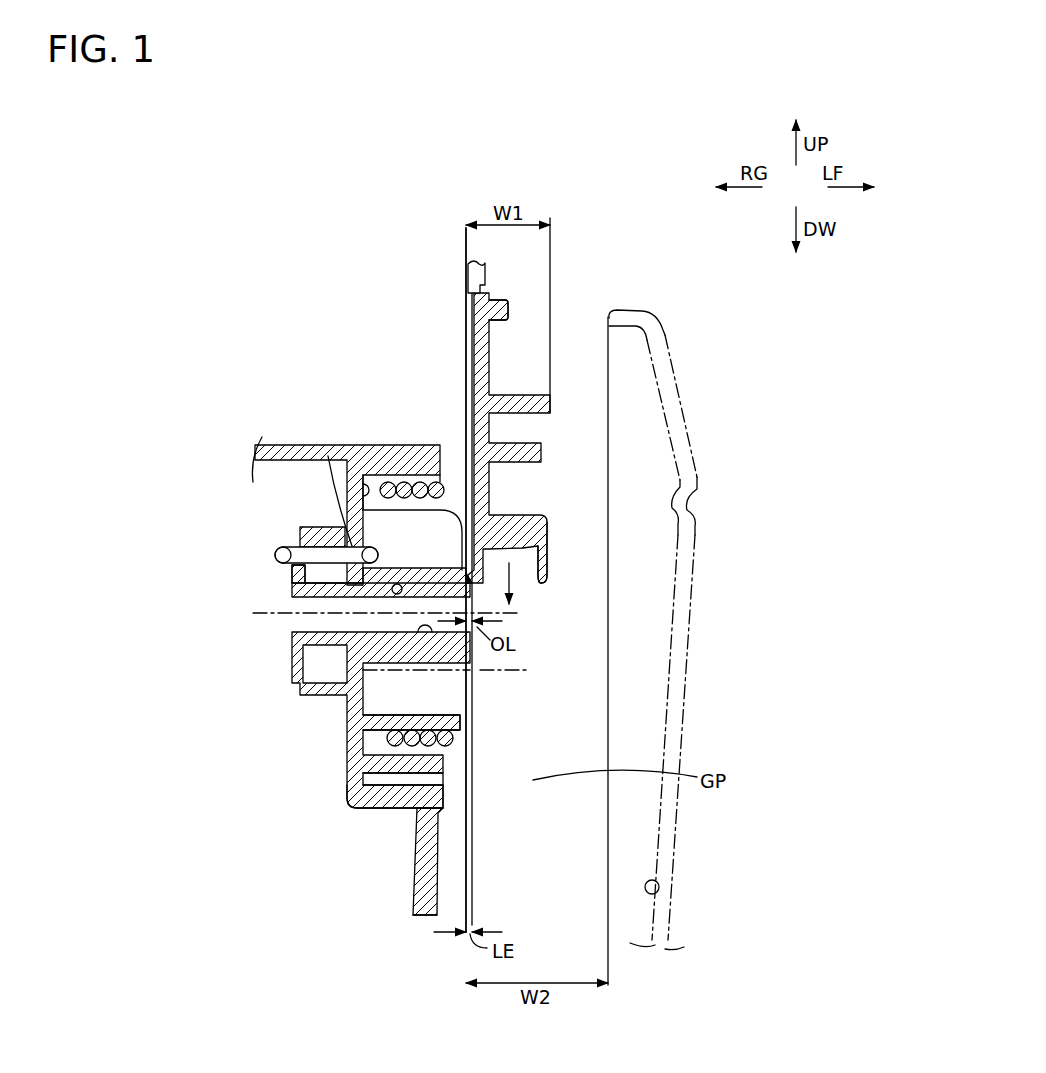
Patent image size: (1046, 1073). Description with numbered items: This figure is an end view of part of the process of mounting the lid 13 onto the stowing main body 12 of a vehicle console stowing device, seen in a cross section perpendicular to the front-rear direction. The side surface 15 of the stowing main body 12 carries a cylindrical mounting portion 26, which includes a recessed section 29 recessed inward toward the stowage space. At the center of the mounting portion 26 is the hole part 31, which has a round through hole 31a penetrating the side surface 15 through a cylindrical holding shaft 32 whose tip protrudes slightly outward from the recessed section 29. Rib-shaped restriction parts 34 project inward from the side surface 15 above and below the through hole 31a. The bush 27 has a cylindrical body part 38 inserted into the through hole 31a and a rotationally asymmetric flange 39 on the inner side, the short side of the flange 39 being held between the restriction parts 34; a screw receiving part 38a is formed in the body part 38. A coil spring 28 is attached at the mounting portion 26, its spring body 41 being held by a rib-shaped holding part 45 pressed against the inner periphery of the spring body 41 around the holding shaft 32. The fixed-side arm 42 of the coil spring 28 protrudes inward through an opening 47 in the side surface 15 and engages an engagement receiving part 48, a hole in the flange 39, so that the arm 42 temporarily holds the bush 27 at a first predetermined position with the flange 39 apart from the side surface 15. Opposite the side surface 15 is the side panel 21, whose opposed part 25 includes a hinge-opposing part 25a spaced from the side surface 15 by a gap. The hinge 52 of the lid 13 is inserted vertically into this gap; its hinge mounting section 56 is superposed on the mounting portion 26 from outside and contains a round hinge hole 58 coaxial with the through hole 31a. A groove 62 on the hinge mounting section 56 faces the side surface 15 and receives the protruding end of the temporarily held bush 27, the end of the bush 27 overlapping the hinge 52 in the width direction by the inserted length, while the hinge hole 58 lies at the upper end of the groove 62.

The lid 13 is at (461, 258).
The hinge hole 58 is at (470, 279).
The groove 62 is at (468, 318).
The hinge 52 is at (483, 355).
The restriction part 34 is at (328, 456).
The recessed section 29 is at (366, 483).
The spring body 41 is at (387, 481).
The coil spring 28 is at (418, 480).
The holding part 45 is at (450, 509).
The opening 47 is at (352, 546).
The arm 42 is at (293, 548).
The engagement receiving part 48 is at (276, 554).
The flange 39 is at (291, 584).
The hole part 31 is at (340, 575).
The through hole 31a is at (397, 584).
The bush 27 is at (291, 661).
The body part 38 is at (422, 638).
The holding shaft 32 is at (347, 733).
The screw receiving part 38a is at (346, 772).
The mounting portion 26 is at (350, 806).
The side surface 15 is at (428, 838).
The stowing main body 12 is at (422, 906).
The hinge mounting section 56 is at (523, 550).
The side panel 21 is at (684, 708).
The opposed part 25 is at (728, 889).
The hinge-opposing part 25a is at (657, 893).